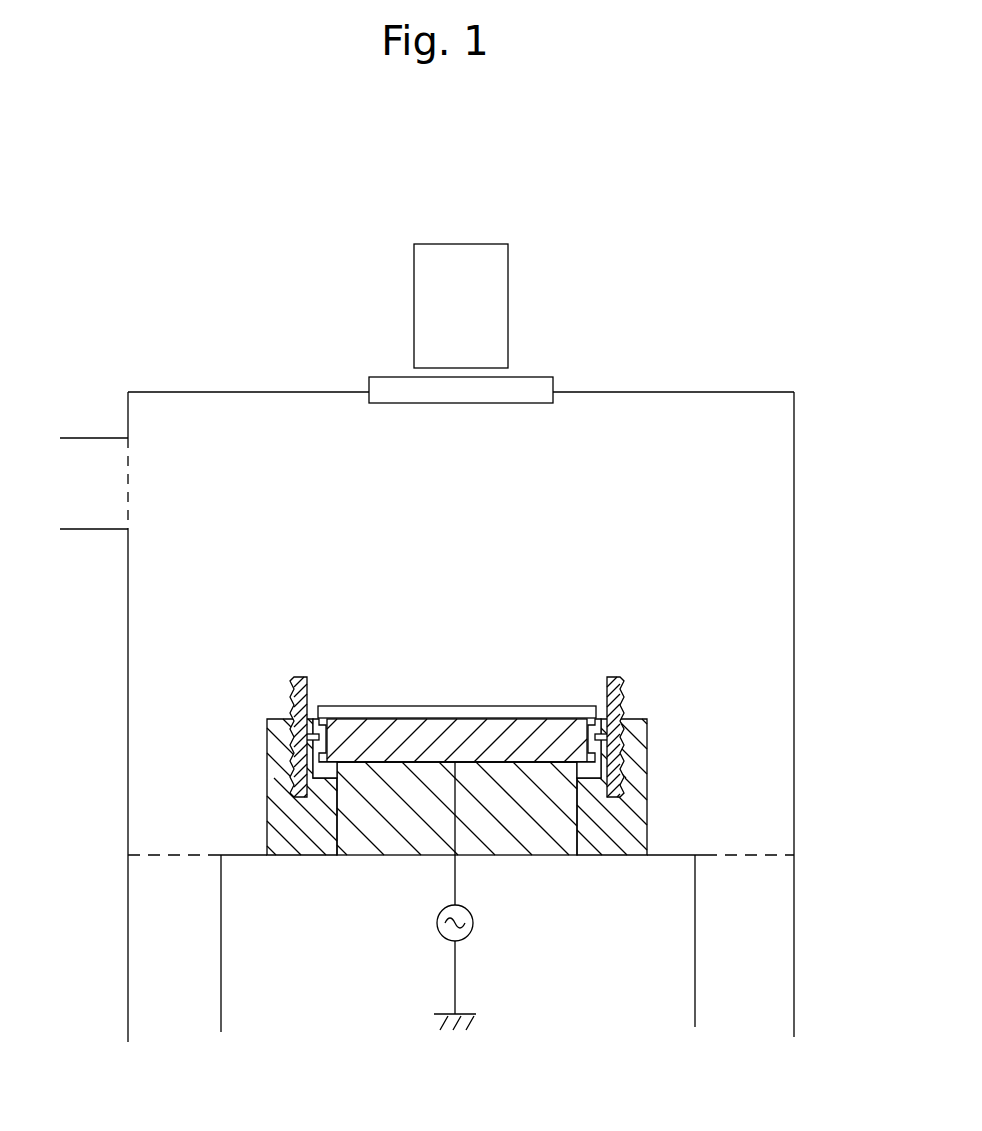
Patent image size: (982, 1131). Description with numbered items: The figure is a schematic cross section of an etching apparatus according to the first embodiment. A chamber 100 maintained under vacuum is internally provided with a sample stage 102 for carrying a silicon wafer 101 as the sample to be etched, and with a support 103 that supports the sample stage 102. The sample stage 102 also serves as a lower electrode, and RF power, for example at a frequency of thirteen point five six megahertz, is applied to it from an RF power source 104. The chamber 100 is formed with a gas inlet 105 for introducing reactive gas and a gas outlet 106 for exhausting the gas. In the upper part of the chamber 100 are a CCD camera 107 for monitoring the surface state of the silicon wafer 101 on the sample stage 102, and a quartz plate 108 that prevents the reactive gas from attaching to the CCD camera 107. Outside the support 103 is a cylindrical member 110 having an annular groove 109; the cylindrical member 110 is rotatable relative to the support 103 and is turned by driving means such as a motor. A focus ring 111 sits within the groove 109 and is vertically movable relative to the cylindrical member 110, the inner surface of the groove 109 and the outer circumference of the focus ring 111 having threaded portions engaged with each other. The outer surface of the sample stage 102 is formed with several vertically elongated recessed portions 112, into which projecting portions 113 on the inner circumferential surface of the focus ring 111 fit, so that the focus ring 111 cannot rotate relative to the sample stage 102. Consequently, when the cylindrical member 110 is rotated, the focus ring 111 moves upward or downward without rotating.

The chamber 100 is at (794, 580).
The silicon wafer 101 is at (518, 705).
The sample stage 102 is at (445, 718).
The support 103 is at (538, 857).
The RF power source 104 is at (436, 923).
The gas inlet 105 is at (89, 530).
The gas outlet 106 is at (128, 970).
The CCD camera 107 is at (508, 256).
The quartz plate 108 is at (539, 377).
The annular groove 109 is at (605, 790).
The cylindrical member 110 is at (647, 787).
The focus ring 111 is at (613, 672).
The vertically elongated recessed portions 112 is at (315, 742).
The projecting portions 113 is at (322, 718).